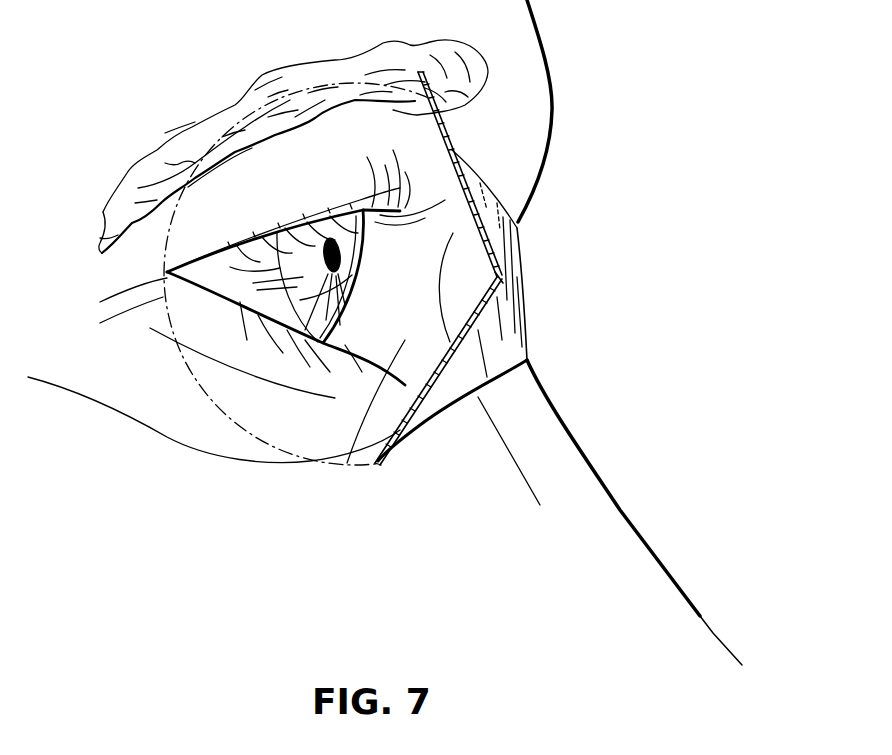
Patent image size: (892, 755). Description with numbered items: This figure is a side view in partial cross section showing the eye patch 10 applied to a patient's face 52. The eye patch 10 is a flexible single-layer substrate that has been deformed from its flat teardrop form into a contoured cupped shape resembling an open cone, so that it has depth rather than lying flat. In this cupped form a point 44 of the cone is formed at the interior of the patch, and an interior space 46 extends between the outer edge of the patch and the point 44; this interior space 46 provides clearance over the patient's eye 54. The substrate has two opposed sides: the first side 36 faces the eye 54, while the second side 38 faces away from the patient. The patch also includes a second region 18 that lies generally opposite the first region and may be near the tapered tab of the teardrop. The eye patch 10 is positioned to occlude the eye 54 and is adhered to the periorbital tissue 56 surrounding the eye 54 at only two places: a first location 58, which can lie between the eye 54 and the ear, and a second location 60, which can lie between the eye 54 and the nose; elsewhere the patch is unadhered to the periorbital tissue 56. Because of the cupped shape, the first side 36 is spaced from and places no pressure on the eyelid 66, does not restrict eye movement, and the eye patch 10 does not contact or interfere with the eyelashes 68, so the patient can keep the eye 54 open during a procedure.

The eye patch 10 is at (465, 290).
The second region 18 is at (517, 337).
The first side 36 is at (393, 110).
The second side 38 is at (455, 165).
The point 44 is at (500, 277).
The interior space 46 is at (347, 462).
The face 52 is at (558, 100).
The eye 54 is at (372, 280).
The periorbital tissue 56 is at (218, 421).
The first location 58 is at (180, 353).
The second location 60 is at (520, 218).
The eyelid 66 is at (347, 203).
The eyelashes 68 is at (376, 205).